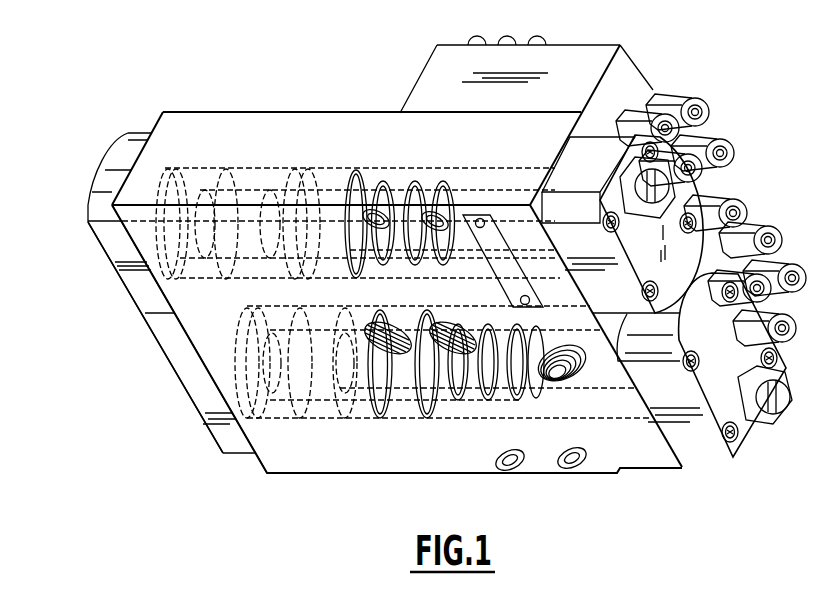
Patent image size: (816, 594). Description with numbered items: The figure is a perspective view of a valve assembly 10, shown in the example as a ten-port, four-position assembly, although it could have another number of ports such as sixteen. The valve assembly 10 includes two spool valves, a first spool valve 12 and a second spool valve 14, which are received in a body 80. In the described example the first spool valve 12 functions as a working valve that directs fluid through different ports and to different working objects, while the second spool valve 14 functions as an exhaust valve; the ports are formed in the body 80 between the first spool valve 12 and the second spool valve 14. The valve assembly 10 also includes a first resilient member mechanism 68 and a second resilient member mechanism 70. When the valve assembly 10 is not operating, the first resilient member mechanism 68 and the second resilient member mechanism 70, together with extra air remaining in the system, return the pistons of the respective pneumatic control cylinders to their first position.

The valve assembly 10 is at (133, 57).
The first spool valve 12 is at (322, 128).
The first resilient member mechanism 68 is at (422, 183).
The body 80 is at (208, 300).
The second spool valve 14 is at (433, 458).
The second resilient member mechanism 70 is at (490, 407).